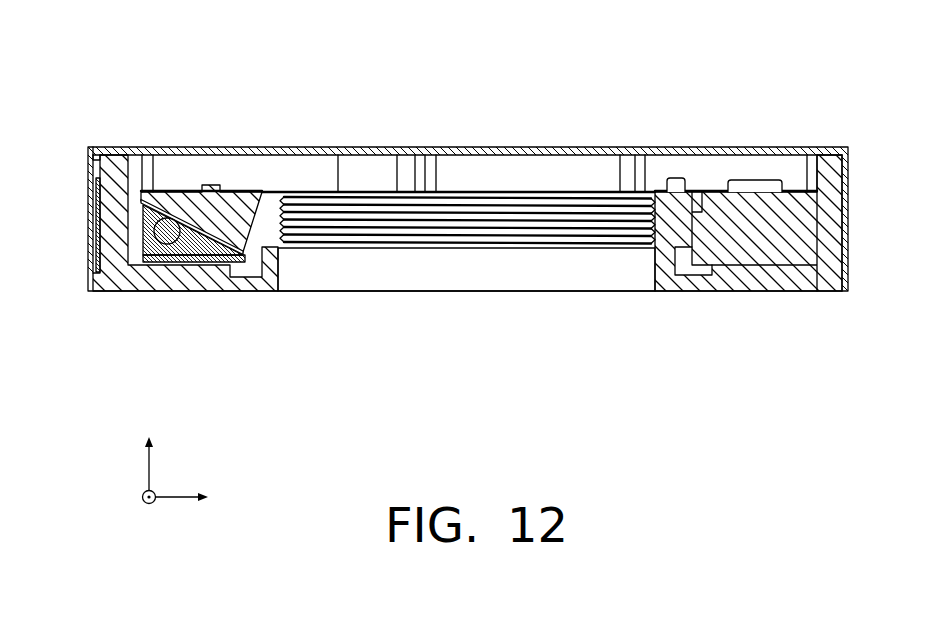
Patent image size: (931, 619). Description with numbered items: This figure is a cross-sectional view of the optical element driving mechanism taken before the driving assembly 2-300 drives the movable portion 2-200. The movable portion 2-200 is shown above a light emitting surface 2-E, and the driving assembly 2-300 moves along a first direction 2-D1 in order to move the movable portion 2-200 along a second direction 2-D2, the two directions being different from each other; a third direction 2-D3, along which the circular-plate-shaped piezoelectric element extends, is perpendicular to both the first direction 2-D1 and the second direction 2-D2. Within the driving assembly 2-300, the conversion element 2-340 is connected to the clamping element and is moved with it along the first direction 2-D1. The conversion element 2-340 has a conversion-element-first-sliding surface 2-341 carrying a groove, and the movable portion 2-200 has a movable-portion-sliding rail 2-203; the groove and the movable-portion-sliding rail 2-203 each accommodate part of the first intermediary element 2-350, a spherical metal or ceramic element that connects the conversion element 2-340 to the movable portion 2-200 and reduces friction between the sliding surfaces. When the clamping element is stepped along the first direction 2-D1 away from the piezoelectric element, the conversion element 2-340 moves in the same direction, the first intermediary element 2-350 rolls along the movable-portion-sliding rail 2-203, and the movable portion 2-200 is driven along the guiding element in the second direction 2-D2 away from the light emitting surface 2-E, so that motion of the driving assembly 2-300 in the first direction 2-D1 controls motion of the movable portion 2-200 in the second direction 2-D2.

The movable portion 2-200 is at (252, 192).
The movable-portion-sliding rail 2-203 is at (192, 222).
The driving assembly 2-300 is at (150, 262).
The conversion element 2-340 is at (150, 257).
The conversion-element-first-sliding surface 2-341 is at (200, 257).
The first intermediary element 2-350 is at (166, 217).
The light emitting surface 2-E is at (596, 293).
The first direction 2-D1 is at (216, 500).
The second direction 2-D2 is at (148, 448).
The third direction 2-D3 is at (110, 500).